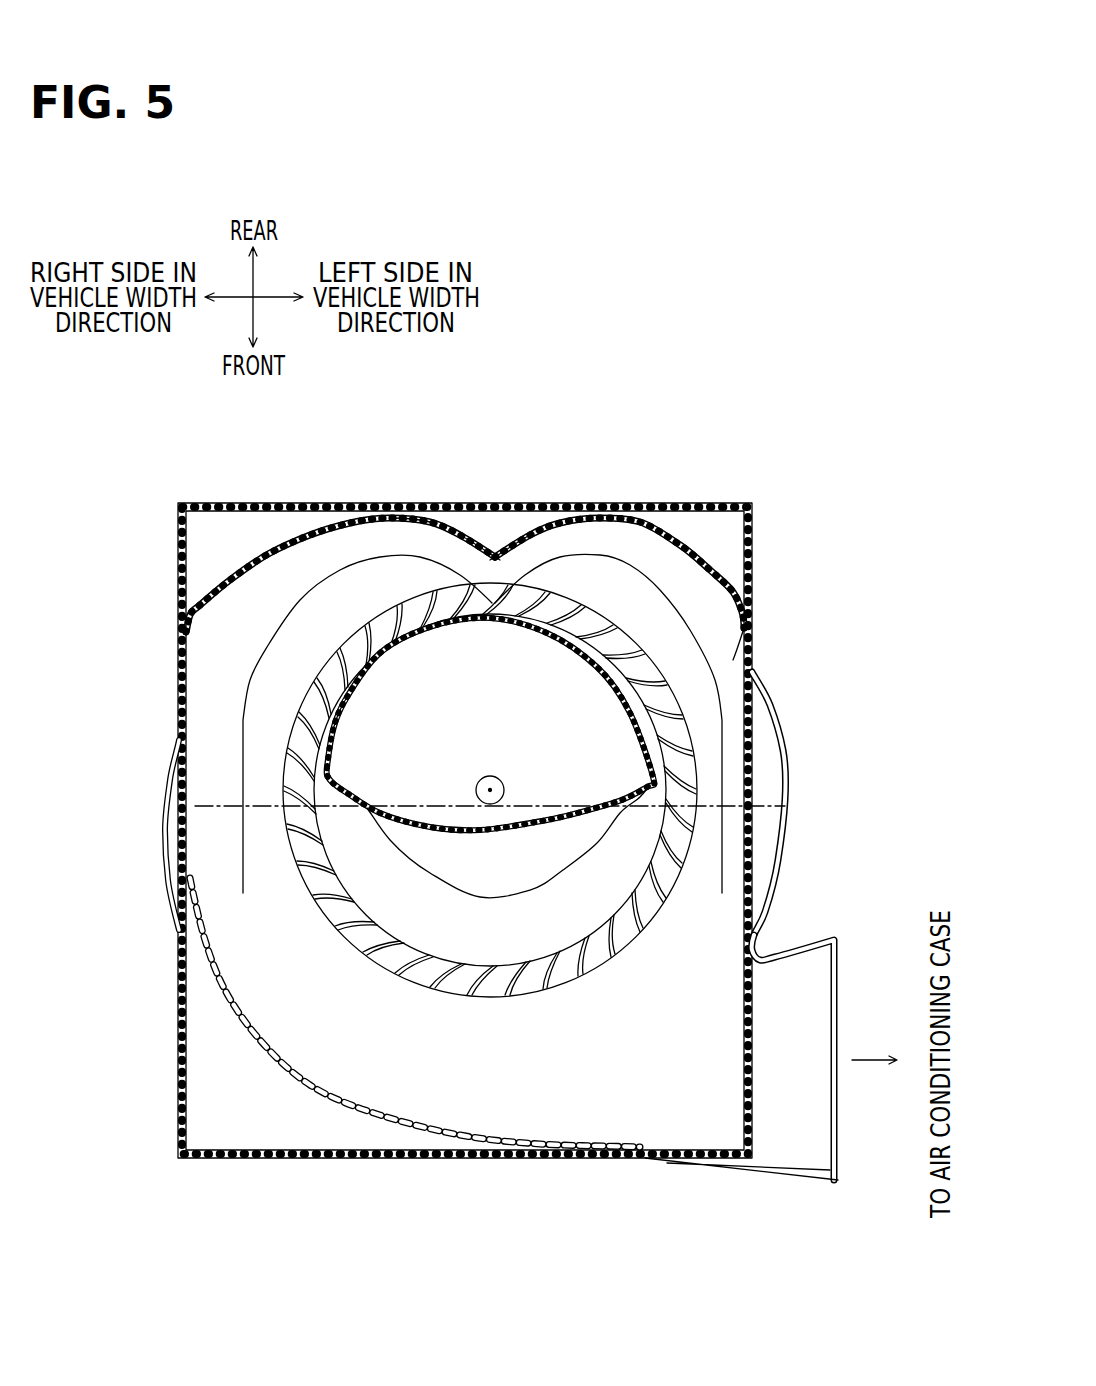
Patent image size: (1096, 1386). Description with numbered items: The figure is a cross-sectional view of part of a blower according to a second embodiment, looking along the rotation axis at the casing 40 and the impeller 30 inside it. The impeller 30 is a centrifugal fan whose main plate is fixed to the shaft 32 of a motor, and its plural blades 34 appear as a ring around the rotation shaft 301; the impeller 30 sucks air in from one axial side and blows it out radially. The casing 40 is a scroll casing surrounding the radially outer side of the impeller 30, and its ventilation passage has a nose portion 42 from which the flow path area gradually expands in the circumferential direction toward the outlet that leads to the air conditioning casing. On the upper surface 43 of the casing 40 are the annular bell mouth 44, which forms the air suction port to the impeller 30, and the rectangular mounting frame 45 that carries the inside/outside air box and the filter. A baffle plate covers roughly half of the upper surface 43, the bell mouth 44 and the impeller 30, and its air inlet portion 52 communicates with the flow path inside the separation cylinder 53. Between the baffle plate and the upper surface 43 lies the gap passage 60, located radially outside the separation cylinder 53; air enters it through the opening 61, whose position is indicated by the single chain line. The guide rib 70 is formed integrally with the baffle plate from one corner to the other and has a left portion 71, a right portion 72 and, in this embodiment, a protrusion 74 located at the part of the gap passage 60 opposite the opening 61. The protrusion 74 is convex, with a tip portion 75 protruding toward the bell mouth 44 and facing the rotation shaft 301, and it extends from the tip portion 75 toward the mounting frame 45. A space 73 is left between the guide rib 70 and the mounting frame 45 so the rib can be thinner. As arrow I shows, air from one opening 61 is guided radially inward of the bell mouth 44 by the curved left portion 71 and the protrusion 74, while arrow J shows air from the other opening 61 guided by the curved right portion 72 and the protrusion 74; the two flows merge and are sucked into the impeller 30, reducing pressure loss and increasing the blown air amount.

The impeller 30 is at (490, 907).
The blades 34 is at (437, 985).
The shaft 32 is at (477, 788).
The rotation shaft 301 is at (333, 728).
The casing 40 is at (481, 841).
The nose portion 42 is at (765, 945).
The upper surface 43 is at (257, 923).
The bell mouth 44 is at (325, 905).
The mounting frame 45 is at (408, 523).
The air inlet portion 52 is at (416, 653).
The separation cylinder 53 is at (555, 858).
The gap passage 60 is at (343, 547).
The opening 61 is at (213, 807).
The guide rib 70 is at (465, 527).
The left portion 71 is at (250, 558).
The right portion 72 is at (672, 533).
The space 73 is at (722, 537).
The protrusion 74 is at (478, 545).
The tip portion 75 is at (505, 555).
The arrow I is at (282, 618).
The arrow J is at (723, 688).